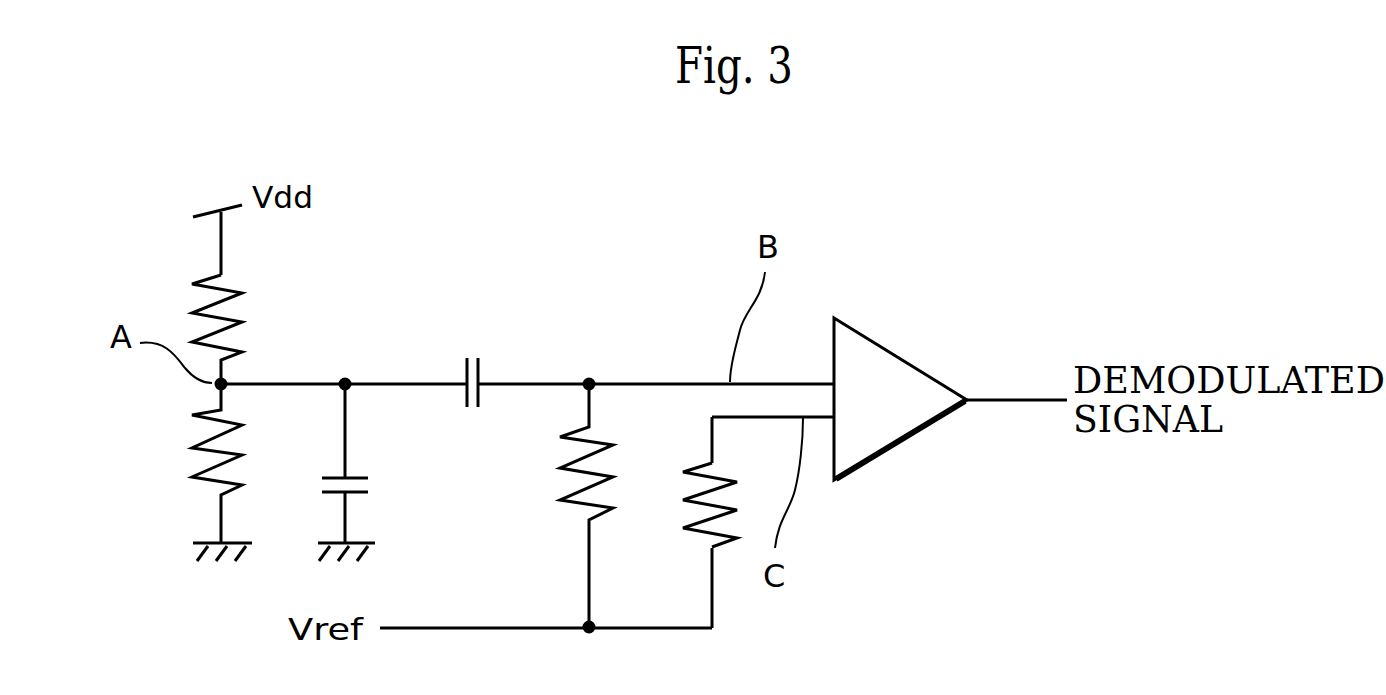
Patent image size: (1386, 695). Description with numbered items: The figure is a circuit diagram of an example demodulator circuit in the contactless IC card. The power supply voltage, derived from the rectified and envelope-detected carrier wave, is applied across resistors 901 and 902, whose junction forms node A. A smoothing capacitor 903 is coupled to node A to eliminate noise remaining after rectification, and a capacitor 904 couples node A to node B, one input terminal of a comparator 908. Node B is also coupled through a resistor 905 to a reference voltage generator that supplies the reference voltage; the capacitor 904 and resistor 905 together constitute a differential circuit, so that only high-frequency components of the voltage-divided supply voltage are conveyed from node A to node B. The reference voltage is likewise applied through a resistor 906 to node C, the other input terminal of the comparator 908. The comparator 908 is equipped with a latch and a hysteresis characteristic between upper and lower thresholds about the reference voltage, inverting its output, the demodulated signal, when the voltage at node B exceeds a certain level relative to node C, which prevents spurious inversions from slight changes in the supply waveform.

The resistor 901 is at (233, 288).
The resistor 902 is at (203, 475).
The capacitor 903 is at (362, 493).
The capacitor 904 is at (480, 368).
The resistor 905 is at (570, 470).
The resistor 906 is at (690, 502).
The comparator 908 is at (895, 348).